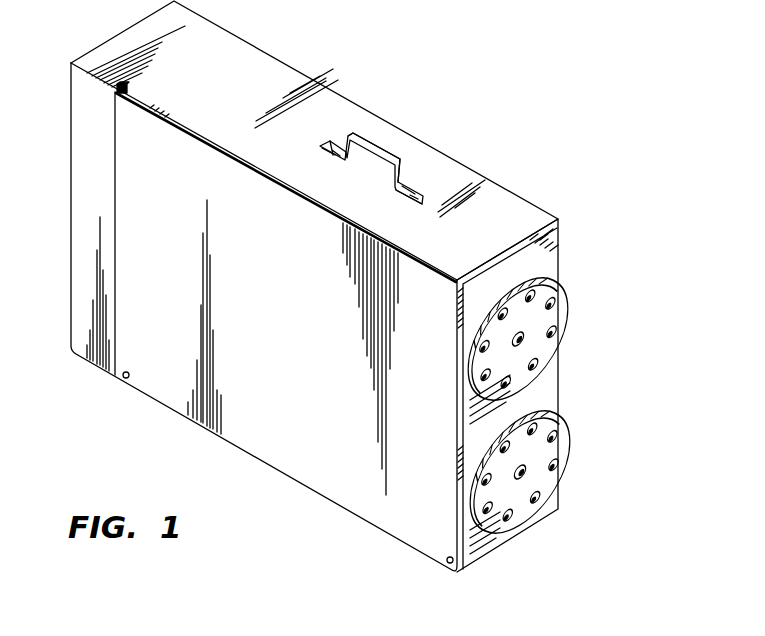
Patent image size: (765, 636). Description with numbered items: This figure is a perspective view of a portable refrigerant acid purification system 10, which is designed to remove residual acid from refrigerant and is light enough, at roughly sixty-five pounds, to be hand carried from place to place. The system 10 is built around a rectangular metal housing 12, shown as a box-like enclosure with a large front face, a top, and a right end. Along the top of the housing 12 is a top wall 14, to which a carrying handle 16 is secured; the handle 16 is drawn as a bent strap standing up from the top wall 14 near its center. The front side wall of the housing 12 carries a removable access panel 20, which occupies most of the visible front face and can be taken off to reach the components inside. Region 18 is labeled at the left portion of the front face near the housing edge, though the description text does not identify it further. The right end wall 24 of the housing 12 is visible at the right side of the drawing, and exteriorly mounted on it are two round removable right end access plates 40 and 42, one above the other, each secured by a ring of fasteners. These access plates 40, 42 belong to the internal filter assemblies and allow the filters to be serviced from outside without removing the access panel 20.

The portable refrigerant acid purification system 10 is at (372, 78).
The rectangular metal housing 12 is at (71, 160).
The top wall 14 is at (493, 210).
The carrying handle 16 is at (386, 152).
The front cover panel 18 is at (88, 222).
The removable access panel 20 is at (310, 348).
The right end wall 24 is at (545, 268).
The removable right end access plate 40 is at (542, 313).
The removable right end access plate 42 is at (560, 437).